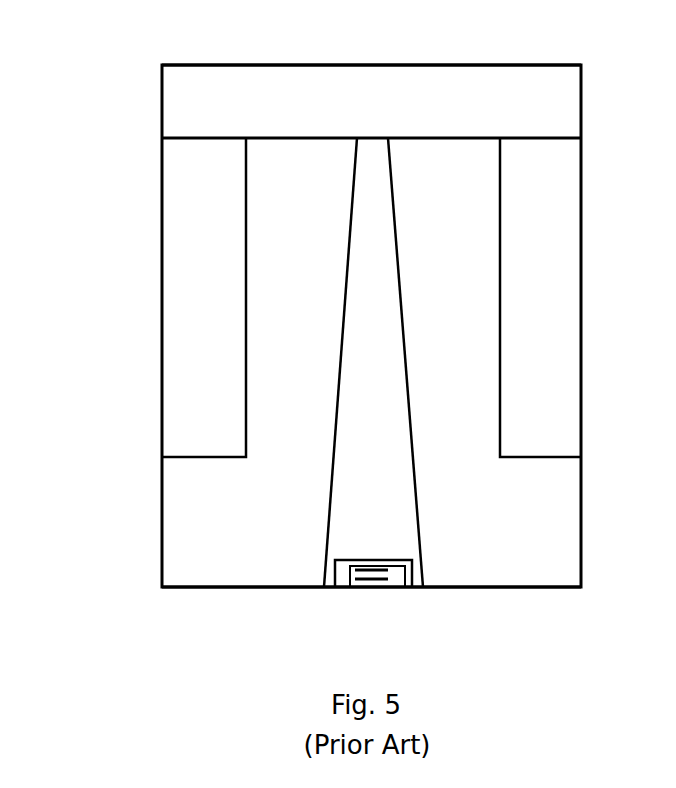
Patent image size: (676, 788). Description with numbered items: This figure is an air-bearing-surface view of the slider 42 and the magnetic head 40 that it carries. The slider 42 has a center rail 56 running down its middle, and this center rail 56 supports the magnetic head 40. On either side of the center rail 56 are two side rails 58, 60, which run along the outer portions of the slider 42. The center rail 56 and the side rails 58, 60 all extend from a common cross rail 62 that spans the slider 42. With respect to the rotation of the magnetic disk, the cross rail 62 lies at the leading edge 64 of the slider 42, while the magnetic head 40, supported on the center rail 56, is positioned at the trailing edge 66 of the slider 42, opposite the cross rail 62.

The magnetic head 40 is at (350, 590).
The slider 42 is at (150, 533).
The center rail 56 is at (358, 245).
The side rail 58 is at (178, 208).
The side rail 60 is at (557, 208).
The cross rail 62 is at (290, 77).
The leading edge 64 is at (435, 67).
The trailing edge 66 is at (481, 590).